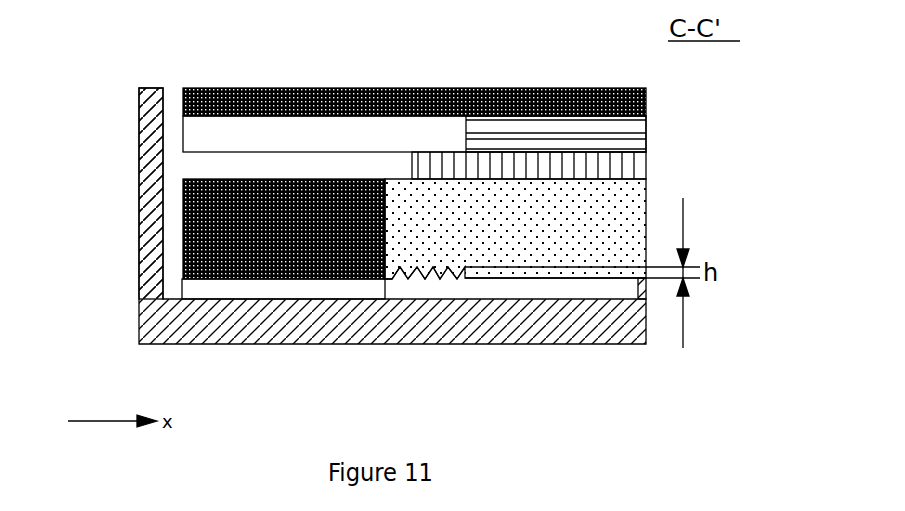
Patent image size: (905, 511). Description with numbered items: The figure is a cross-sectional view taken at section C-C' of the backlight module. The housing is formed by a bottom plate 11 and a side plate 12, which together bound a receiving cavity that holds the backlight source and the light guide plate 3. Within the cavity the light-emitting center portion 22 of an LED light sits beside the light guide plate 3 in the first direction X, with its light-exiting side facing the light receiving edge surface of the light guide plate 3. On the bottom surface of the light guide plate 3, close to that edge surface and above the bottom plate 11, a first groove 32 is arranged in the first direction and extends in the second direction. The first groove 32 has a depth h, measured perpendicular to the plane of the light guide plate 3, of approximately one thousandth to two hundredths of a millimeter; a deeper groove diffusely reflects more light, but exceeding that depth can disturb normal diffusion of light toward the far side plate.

The bottom plate 11 is at (197, 326).
The side plate 12 is at (157, 273).
The light-emitting center portion 22 is at (203, 228).
The light guide plate 3 is at (603, 218).
The first groove 32 is at (448, 275).